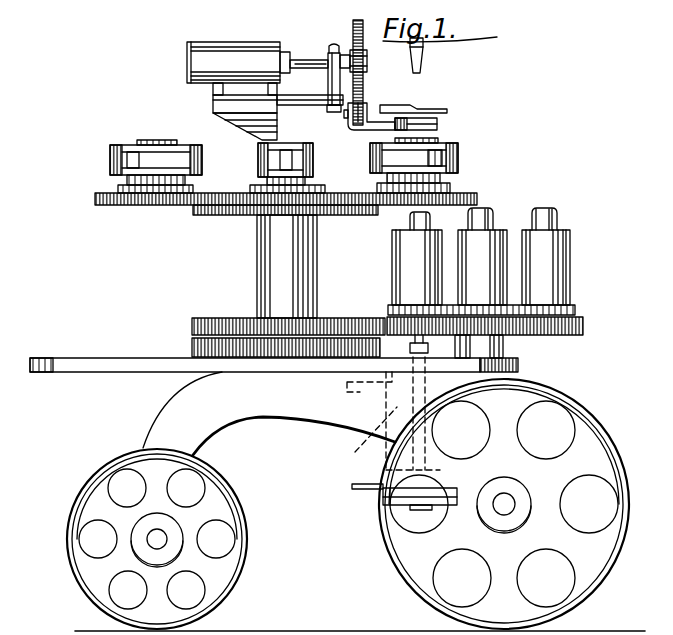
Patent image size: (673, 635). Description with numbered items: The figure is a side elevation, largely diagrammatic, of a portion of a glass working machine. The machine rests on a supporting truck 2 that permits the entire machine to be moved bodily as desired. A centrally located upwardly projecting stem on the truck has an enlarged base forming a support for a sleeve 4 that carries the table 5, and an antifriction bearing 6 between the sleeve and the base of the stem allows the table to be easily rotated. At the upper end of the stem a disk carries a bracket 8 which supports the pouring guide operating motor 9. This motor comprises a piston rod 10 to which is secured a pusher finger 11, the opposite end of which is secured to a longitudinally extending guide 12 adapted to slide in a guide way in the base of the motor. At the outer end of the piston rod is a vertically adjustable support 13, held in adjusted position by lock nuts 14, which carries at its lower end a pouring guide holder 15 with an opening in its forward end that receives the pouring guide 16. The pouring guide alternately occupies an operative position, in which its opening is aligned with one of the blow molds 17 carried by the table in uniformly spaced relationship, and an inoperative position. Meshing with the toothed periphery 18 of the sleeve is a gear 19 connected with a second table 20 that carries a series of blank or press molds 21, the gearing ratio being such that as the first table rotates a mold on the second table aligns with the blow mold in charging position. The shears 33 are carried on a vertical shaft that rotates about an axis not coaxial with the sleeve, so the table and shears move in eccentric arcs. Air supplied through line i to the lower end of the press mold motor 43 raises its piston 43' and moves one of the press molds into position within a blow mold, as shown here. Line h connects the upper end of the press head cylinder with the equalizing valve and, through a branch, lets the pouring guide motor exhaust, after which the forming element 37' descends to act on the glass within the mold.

The supporting truck 2 is at (273, 372).
The sleeve 4 is at (270, 268).
The table 5 is at (165, 201).
The antifriction bearing 6 is at (194, 345).
The bracket 8 is at (290, 152).
The pouring guide operating motor 9 is at (207, 74).
The piston rod 10 is at (302, 61).
The pusher finger 11 is at (328, 86).
The longitudinally extending guide 12 is at (318, 101).
The vertically adjustable support 13 is at (364, 86).
The lock nuts 14 is at (368, 56).
The pouring guide holder 15 is at (376, 131).
The pouring guide 16 is at (438, 125).
The blow molds 17 is at (150, 157).
The toothed periphery 18 is at (193, 327).
The gear 19 is at (585, 326).
The second table 20 is at (410, 272).
The blank or press molds 21 is at (410, 216).
The shears 33 is at (426, 107).
The forming element 37' is at (445, 59).
The press mold motor 43 is at (362, 433).
The piston 43' is at (444, 469).
The line h is at (350, 392).
The line i is at (368, 484).